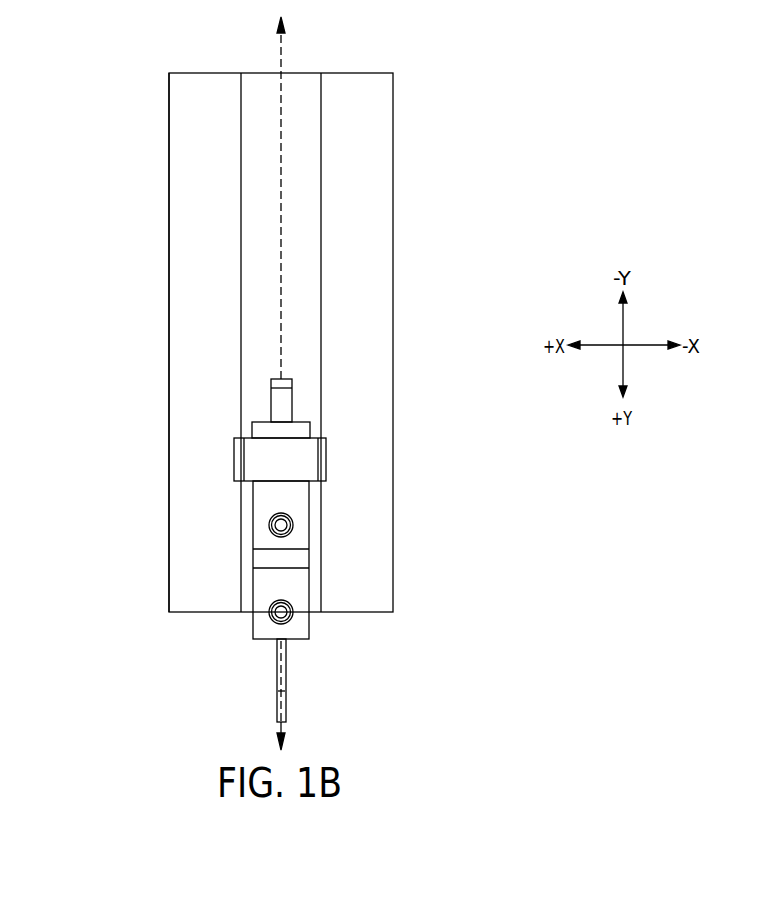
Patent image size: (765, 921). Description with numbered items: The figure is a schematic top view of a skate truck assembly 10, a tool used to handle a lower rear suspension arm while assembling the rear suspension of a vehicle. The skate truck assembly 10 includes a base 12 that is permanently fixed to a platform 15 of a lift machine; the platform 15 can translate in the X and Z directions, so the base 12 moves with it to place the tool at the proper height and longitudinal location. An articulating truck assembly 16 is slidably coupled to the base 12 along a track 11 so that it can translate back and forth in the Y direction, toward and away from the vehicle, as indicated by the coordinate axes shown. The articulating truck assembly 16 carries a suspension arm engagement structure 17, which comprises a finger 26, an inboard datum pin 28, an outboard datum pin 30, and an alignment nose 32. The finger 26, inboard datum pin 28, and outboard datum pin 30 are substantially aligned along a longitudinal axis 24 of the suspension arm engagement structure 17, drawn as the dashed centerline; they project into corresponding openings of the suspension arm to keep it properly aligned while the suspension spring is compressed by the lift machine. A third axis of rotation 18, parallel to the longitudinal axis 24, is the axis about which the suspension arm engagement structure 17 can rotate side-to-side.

The skate truck assembly 10 is at (108, 648).
The track 11 is at (289, 80).
The base 12 is at (306, 255).
The platform 15 is at (386, 398).
The articulating truck assembly 16 is at (408, 575).
The suspension arm engagement structure 17 is at (210, 538).
The third axis of rotation 18 is at (278, 33).
The longitudinal axis 24 is at (280, 61).
The finger 26 is at (286, 705).
The inboard datum pin 28 is at (290, 610).
The outboard datum pin 30 is at (290, 523).
The alignment nose 32 is at (283, 410).